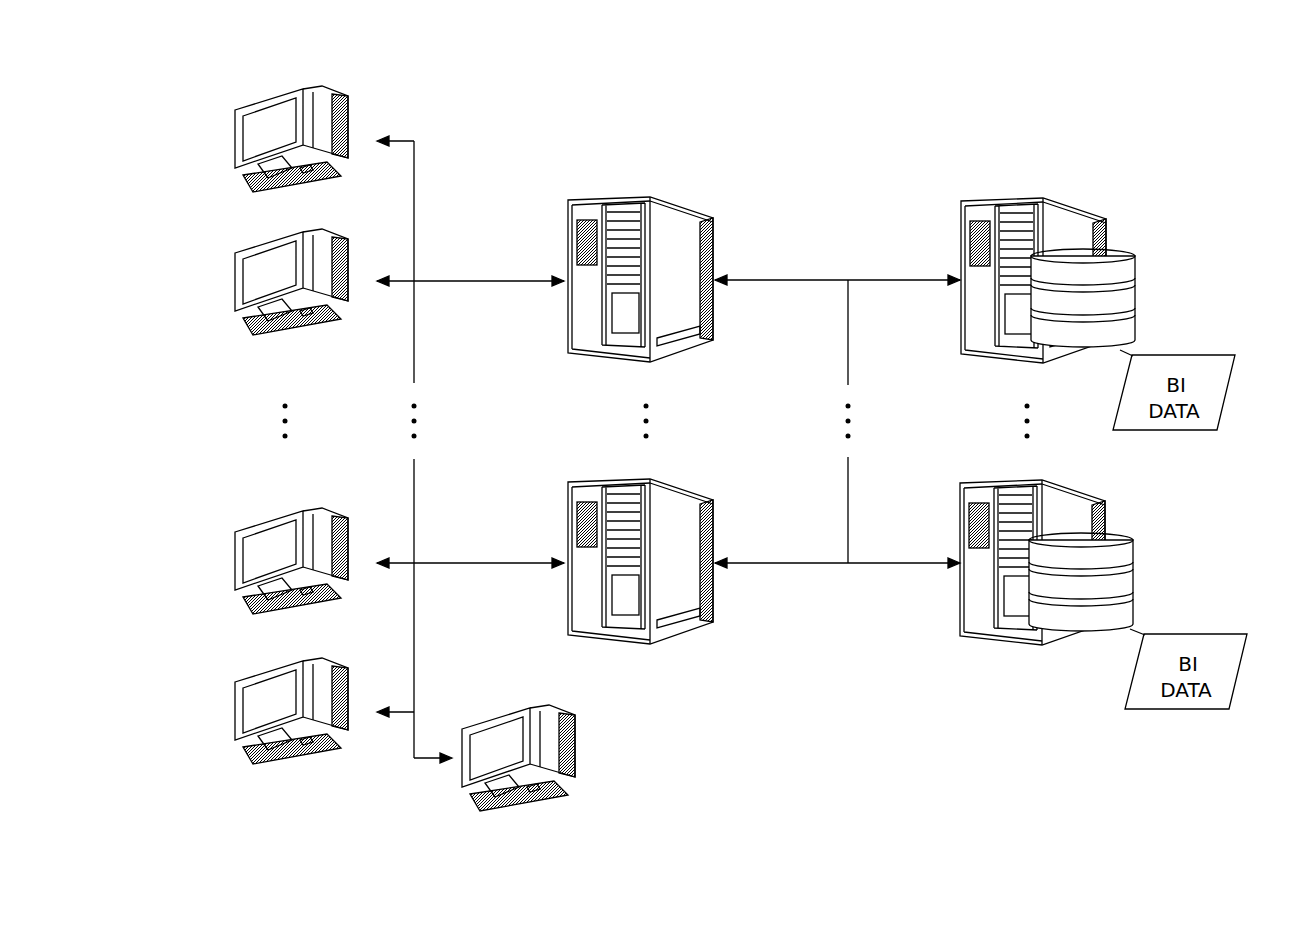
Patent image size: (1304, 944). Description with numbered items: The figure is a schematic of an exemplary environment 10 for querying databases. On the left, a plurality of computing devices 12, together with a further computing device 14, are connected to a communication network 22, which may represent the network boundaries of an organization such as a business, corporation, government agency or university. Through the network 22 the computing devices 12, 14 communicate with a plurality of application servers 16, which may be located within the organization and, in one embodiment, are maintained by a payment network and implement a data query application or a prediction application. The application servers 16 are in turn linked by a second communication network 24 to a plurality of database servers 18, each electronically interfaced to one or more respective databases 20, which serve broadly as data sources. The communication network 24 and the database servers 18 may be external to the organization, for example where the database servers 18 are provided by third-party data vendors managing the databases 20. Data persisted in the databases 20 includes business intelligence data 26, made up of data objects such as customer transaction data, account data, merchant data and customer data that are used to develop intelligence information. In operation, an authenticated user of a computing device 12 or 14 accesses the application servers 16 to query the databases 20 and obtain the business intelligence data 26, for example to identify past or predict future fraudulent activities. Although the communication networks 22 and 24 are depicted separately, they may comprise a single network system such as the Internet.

The environment 10 is at (801, 90).
The computing device 12 is at (233, 130).
The computing device 14 is at (578, 743).
The application server 16 is at (566, 220).
The database server 18 is at (1108, 231).
The database 20 is at (1137, 305).
The communication network 22 is at (422, 163).
The communication network 24 is at (848, 272).
The business intelligence (BI) data 26 is at (1200, 353).